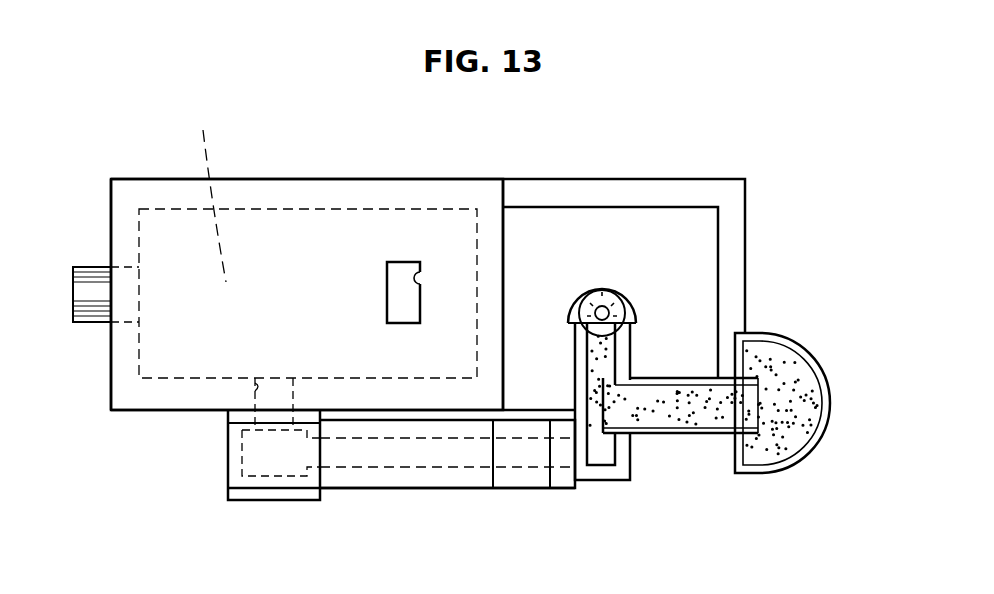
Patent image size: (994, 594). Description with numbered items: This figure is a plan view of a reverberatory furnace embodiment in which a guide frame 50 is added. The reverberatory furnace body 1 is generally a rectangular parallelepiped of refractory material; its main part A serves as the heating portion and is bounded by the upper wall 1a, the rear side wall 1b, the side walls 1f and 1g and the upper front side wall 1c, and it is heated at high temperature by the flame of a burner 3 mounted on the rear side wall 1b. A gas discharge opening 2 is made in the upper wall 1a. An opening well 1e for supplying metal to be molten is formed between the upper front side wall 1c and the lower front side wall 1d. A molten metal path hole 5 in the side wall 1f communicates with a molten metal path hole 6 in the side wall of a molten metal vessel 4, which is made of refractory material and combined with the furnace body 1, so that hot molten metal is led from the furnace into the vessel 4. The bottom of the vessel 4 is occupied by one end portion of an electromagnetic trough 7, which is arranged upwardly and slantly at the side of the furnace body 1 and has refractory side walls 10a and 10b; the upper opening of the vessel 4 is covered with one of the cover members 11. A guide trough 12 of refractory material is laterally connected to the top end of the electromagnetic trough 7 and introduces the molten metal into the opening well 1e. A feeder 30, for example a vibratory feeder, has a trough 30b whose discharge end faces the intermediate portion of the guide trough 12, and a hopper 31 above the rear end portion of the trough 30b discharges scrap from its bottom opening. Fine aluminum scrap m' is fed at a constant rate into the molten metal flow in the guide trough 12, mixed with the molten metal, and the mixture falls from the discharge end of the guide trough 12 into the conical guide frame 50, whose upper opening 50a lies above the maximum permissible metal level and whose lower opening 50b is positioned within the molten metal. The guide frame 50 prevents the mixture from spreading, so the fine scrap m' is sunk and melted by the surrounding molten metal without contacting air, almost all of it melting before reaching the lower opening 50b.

The reverberatory furnace body 1 is at (470, 173).
The upper wall 1a is at (322, 222).
The rear side wall 1b is at (111, 209).
The upper front side wall 1c is at (490, 352).
The lower front side wall 1d is at (733, 218).
The opening well 1e is at (700, 260).
The side wall 1f is at (172, 412).
The side wall 1g is at (268, 179).
The gas discharge opening 2 is at (420, 266).
The burner 3 is at (89, 292).
The molten metal vessel 4 is at (227, 495).
The molten metal path hole 5 is at (255, 380).
The molten metal path hole 6 is at (257, 427).
The electromagnetic trough 7 is at (373, 488).
The side wall 10a is at (422, 488).
The side wall 10b is at (388, 386).
The cover members 11 is at (566, 478).
The guide trough 12 is at (607, 472).
The feeder 30 is at (690, 440).
The trough 30b is at (648, 437).
The hopper 31 is at (776, 335).
The guide frame 50 is at (577, 287).
The upper opening 50a is at (597, 292).
The lower opening 50b is at (610, 307).
The heating portion A is at (210, 196).
The fine aluminum scrap m' is at (782, 435).